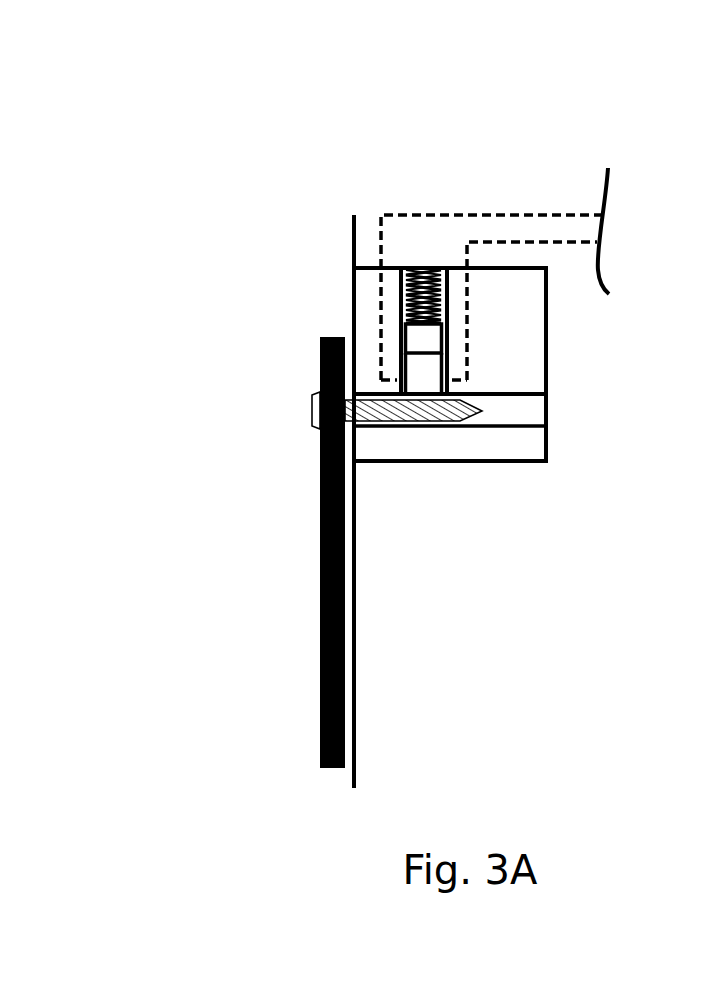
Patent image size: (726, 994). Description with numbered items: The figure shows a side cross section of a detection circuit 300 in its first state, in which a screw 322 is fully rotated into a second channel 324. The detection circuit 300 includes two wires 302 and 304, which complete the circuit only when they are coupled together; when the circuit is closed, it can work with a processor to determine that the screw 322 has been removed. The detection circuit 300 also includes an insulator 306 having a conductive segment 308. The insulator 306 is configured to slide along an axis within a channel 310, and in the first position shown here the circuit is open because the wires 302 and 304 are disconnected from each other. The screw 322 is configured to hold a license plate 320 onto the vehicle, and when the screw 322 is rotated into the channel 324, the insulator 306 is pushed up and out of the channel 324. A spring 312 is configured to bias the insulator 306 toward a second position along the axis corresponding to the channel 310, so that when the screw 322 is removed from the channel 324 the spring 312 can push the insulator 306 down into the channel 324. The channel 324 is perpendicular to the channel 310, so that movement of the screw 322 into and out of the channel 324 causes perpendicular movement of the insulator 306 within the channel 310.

The detection circuit 300 is at (459, 80).
The wire 302 is at (398, 214).
The wire 304 is at (527, 240).
The insulator 306 is at (422, 380).
The conductive segment 308 is at (442, 352).
The channel 310 is at (447, 306).
The spring 312 is at (400, 298).
The license plate 320 is at (345, 643).
The screw 322 is at (312, 421).
The second channel 324 is at (482, 427).